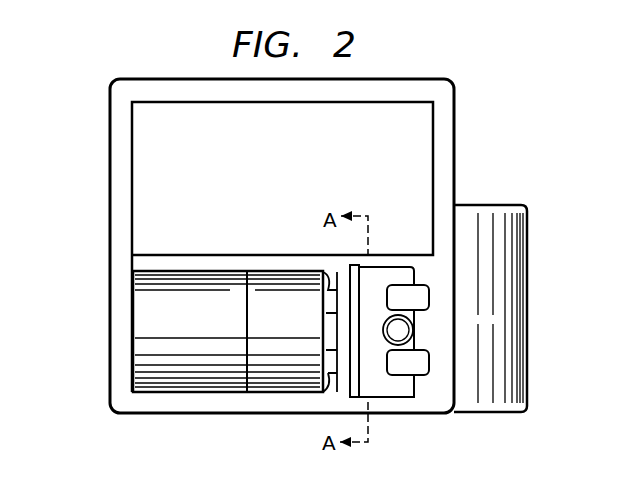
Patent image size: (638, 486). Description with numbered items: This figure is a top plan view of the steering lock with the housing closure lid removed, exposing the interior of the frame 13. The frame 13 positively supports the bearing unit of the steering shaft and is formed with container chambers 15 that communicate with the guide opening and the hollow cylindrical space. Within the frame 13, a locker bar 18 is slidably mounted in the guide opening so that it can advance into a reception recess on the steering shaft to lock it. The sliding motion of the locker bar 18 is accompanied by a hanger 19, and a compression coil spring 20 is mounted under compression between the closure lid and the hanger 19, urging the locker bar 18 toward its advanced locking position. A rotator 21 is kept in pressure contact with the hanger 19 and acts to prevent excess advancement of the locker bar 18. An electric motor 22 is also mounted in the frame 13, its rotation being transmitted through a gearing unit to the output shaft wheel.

The frame 13 is at (527, 378).
The container chambers 15 is at (145, 300).
The locker bar 18 is at (418, 367).
The hanger 19 is at (395, 388).
The compression coil spring 20 is at (413, 330).
The rotator 21 is at (350, 377).
The electric motor 22 is at (175, 377).